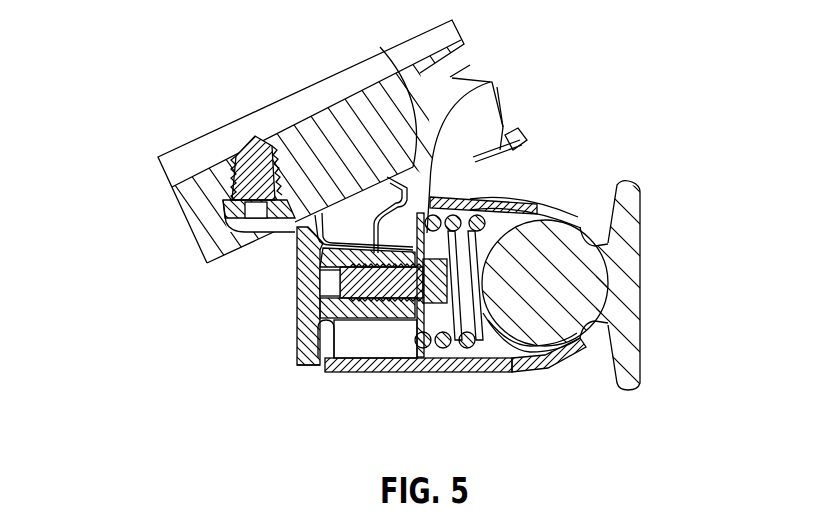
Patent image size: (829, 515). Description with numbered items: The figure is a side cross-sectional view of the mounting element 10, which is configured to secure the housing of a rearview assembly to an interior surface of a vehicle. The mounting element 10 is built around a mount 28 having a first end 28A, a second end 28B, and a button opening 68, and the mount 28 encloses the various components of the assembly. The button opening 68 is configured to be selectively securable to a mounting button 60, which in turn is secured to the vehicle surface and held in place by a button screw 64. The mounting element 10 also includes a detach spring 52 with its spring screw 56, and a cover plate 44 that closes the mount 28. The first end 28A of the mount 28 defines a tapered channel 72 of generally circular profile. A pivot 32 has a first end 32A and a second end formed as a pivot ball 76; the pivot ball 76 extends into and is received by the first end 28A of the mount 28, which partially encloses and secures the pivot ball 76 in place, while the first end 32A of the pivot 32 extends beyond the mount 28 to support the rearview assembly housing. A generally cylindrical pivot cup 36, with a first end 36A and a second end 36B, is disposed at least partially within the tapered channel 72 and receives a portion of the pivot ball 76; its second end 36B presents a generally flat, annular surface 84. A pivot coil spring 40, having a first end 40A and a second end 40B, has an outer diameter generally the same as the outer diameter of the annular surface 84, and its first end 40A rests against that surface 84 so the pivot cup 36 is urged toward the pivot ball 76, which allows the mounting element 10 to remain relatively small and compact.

The mounting element 10 is at (150, 72).
The mounting button 60 is at (157, 157).
The button screw 64 is at (205, 236).
The detach spring 52 is at (387, 70).
The pivot coil spring 40 is at (452, 247).
The first end of pivot coil spring 40A is at (522, 345).
The second end of pivot coil spring 40B is at (387, 372).
The button opening 68 is at (515, 228).
The mount 28 is at (440, 243).
The first end of mount 28A is at (617, 177).
The second end of mount 28B is at (302, 368).
The pivot cup 36 is at (551, 268).
The first end of pivot cup 36A is at (590, 330).
The second end of pivot cup 36B is at (470, 147).
The pivot ball 76 is at (552, 202).
The tapered channel 72 is at (568, 337).
The pivot 32 is at (654, 277).
The first end of pivot 32A is at (642, 317).
The spring screw 56 is at (338, 277).
The cover plate 44 is at (296, 342).
The generally flat, annular surface 84 is at (468, 360).